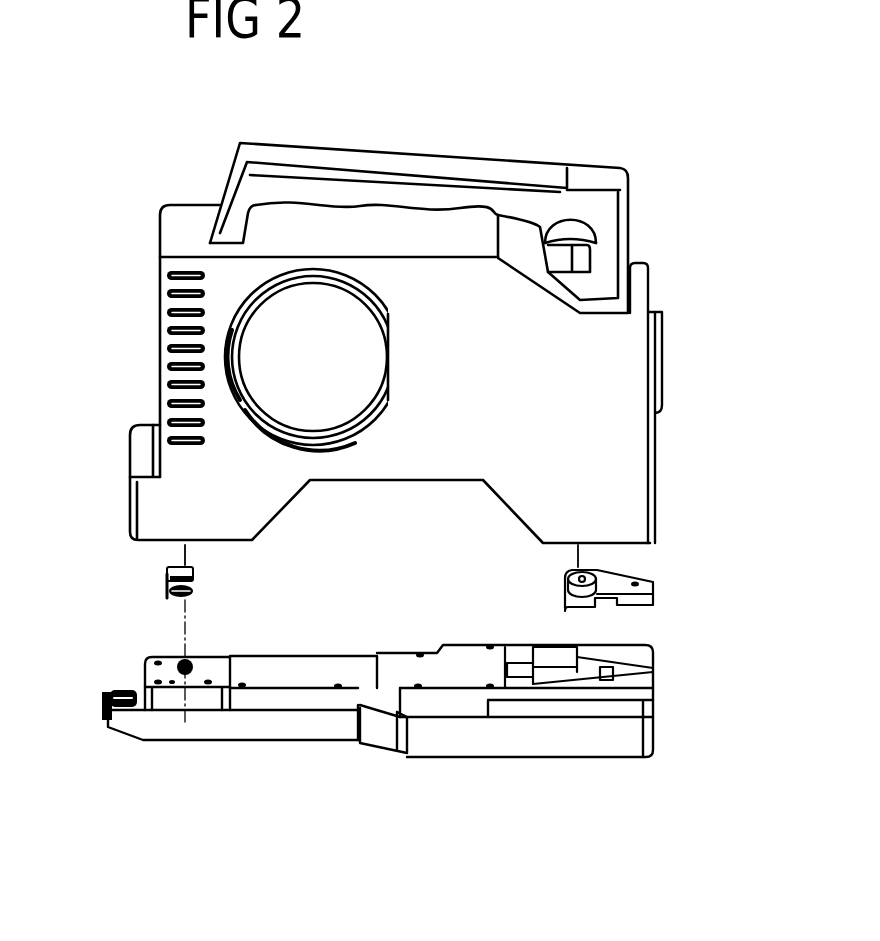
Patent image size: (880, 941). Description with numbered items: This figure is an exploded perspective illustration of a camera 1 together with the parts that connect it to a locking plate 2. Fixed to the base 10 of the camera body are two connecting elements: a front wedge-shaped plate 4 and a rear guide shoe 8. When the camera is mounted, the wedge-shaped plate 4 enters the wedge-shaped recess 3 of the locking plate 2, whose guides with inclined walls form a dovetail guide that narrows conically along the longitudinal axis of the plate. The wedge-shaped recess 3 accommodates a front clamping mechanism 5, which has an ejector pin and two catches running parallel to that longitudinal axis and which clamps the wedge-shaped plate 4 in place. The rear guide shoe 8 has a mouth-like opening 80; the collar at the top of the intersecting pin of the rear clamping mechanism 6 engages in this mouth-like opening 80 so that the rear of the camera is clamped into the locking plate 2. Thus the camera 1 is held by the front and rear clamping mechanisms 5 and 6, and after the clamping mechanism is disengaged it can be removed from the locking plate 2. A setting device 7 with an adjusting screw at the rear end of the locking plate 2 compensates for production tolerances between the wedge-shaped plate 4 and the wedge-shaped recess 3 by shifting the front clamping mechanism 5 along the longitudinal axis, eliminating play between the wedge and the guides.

The camera 1 is at (607, 355).
The locking plate 2 is at (425, 745).
The wedge-shaped recess 3 is at (640, 680).
The wedge-shaped plate 4 is at (653, 590).
The front clamping mechanism 5 is at (553, 678).
The rear clamping mechanism 6 is at (145, 667).
The setting device 7 is at (100, 703).
The rear guide shoe 8 is at (163, 583).
The mouth-like opening 80 is at (195, 585).
The base 10 is at (652, 527).